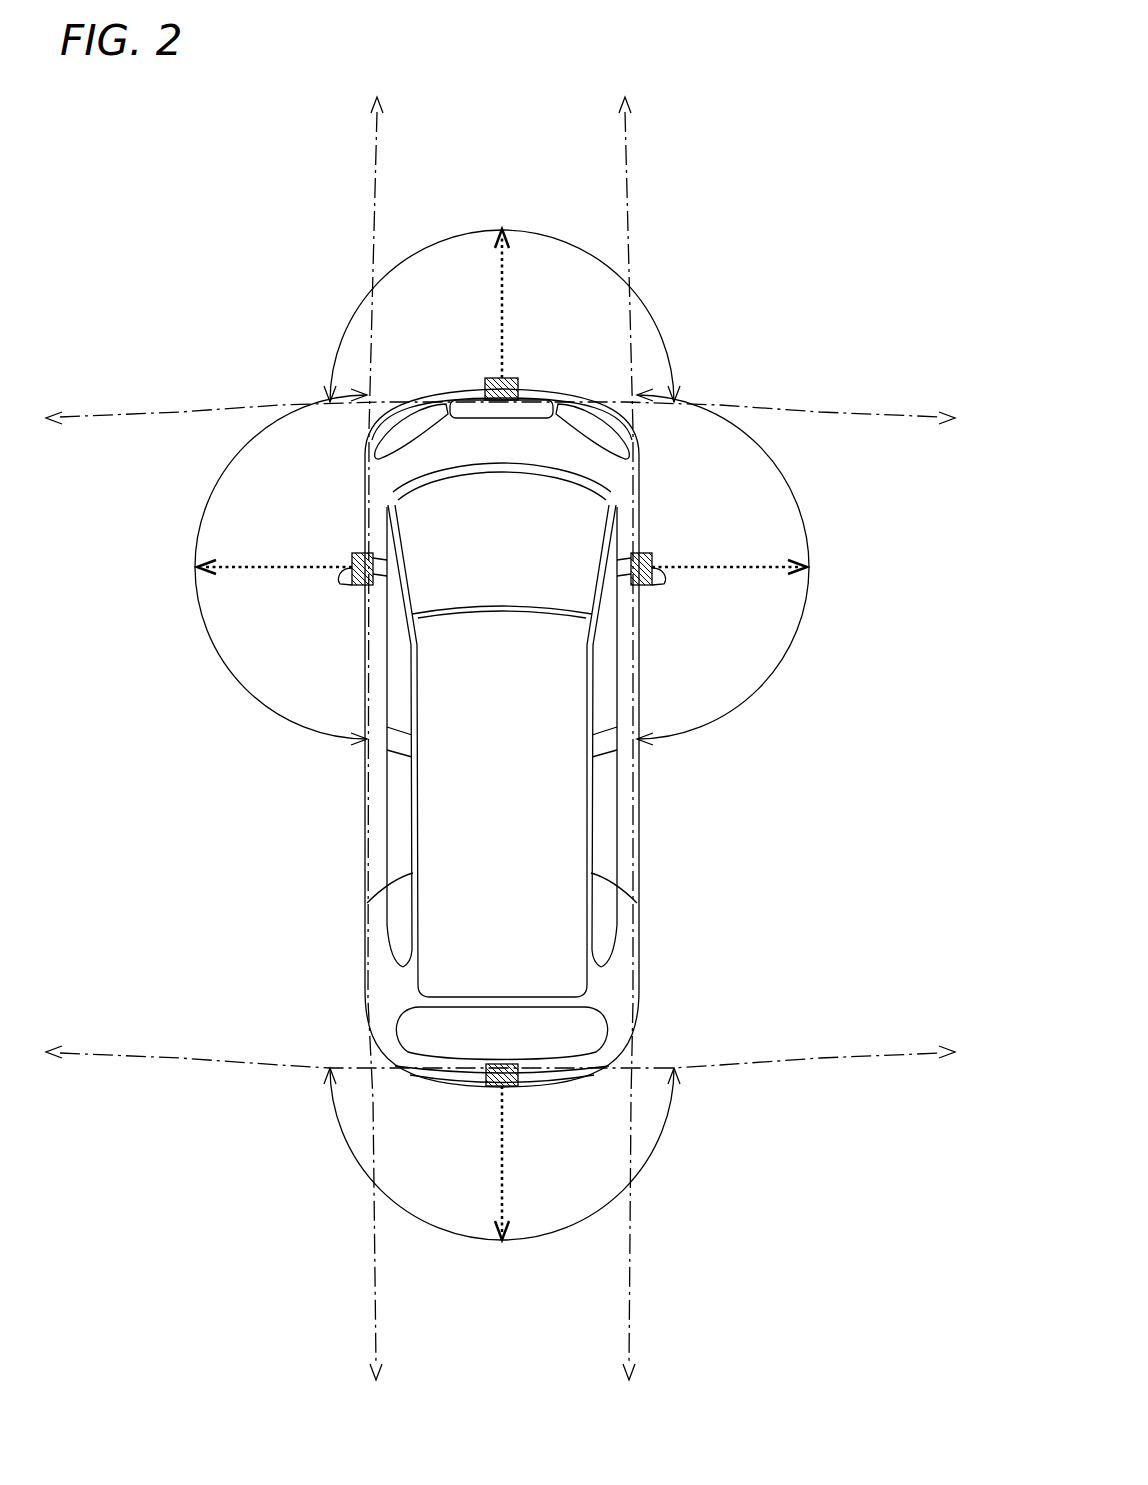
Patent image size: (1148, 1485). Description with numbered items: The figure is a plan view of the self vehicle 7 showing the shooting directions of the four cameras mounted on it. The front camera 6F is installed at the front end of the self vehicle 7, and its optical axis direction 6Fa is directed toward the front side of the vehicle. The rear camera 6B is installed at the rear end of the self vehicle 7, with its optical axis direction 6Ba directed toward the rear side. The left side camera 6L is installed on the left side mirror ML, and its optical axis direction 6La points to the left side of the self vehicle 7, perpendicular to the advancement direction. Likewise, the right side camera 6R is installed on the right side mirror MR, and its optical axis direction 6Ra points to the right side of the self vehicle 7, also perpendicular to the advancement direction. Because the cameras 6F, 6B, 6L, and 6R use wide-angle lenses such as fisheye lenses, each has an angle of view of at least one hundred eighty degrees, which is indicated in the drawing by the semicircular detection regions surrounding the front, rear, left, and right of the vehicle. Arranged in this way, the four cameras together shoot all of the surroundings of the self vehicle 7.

The self vehicle 7 is at (535, 797).
The front camera 6F is at (519, 380).
The optical axis direction 6Fa is at (497, 318).
The rear camera 6B is at (515, 1090).
The optical axis direction 6Ba is at (497, 1160).
The left side camera 6L is at (355, 552).
The optical axis direction 6La is at (272, 576).
The right side camera 6R is at (651, 552).
The optical axis direction 6Ra is at (723, 576).
The left side mirror ML is at (348, 588).
The right side mirror MR is at (656, 588).